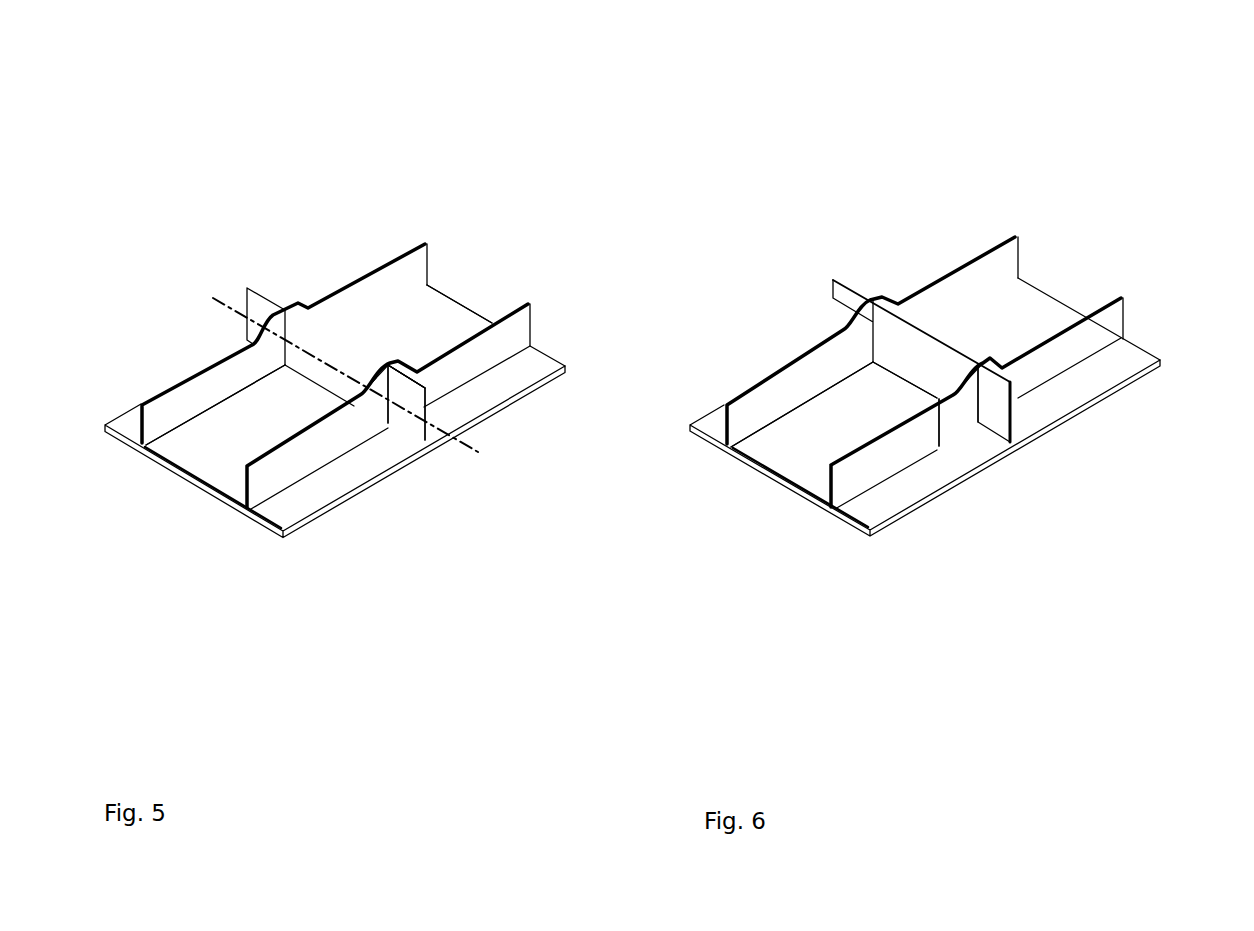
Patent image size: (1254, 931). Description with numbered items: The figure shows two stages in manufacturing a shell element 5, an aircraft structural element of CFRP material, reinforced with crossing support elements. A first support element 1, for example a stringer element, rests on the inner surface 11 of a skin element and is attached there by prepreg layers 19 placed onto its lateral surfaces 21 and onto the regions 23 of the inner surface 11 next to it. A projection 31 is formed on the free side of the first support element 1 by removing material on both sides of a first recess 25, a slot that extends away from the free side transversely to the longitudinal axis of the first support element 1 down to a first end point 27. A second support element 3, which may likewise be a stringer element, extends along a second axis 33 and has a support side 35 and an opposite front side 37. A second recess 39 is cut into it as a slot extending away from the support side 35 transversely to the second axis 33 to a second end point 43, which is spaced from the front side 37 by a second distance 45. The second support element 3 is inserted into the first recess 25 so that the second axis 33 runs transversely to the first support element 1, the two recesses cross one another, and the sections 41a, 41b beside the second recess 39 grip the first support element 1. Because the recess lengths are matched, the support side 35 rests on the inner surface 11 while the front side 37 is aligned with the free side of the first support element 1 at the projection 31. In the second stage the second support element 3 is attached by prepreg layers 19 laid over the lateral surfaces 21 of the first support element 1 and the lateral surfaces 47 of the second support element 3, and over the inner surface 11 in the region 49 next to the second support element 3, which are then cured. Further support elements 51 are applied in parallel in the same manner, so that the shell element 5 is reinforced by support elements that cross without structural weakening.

In FIG. 5, the first support element 1 is at (273, 473).
In FIG. 6, the first support element 1 is at (1105, 328).
In FIG. 5, the second support element 3 is at (410, 425).
In FIG. 6, the second support element 3 is at (957, 360).
In FIG. 5, the shell element 5 is at (419, 148).
In FIG. 6, the shell element 5 is at (813, 180).
In FIG. 5, the inner surface 11 is at (438, 318).
In FIG. 6, the prepreg layers 19 is at (930, 370).
In FIG. 6, the lateral surfaces 21 is at (901, 360).
In FIG. 6, the regions 23 is at (880, 390).
In FIG. 5, the first recess 25 is at (387, 397).
In FIG. 5, the first end point 27 is at (406, 376).
In FIG. 5, the projection 31 is at (380, 388).
In FIG. 6, the projection 31 is at (992, 365).
In FIG. 5, the second axis 33 is at (236, 310).
In FIG. 5, the support side 35 is at (318, 387).
In FIG. 5, the front side 37 is at (329, 333).
In FIG. 5, the second recess 39 is at (366, 393).
In FIG. 5, the section 41a is at (401, 422).
In FIG. 5, the section 41b is at (352, 398).
In FIG. 5, the second end point 43 is at (390, 388).
In FIG. 5, the second distance 45 is at (390, 382).
In FIG. 5, the lateral surfaces 47 is at (327, 348).
In FIG. 6, the lateral surfaces 47 is at (995, 402).
In FIG. 5, the region 49 is at (285, 388).
In FIG. 6, the region 49 is at (802, 404).
In FIG. 5, the further support elements 51 is at (208, 390).
In FIG. 6, the further support elements 51 is at (808, 382).